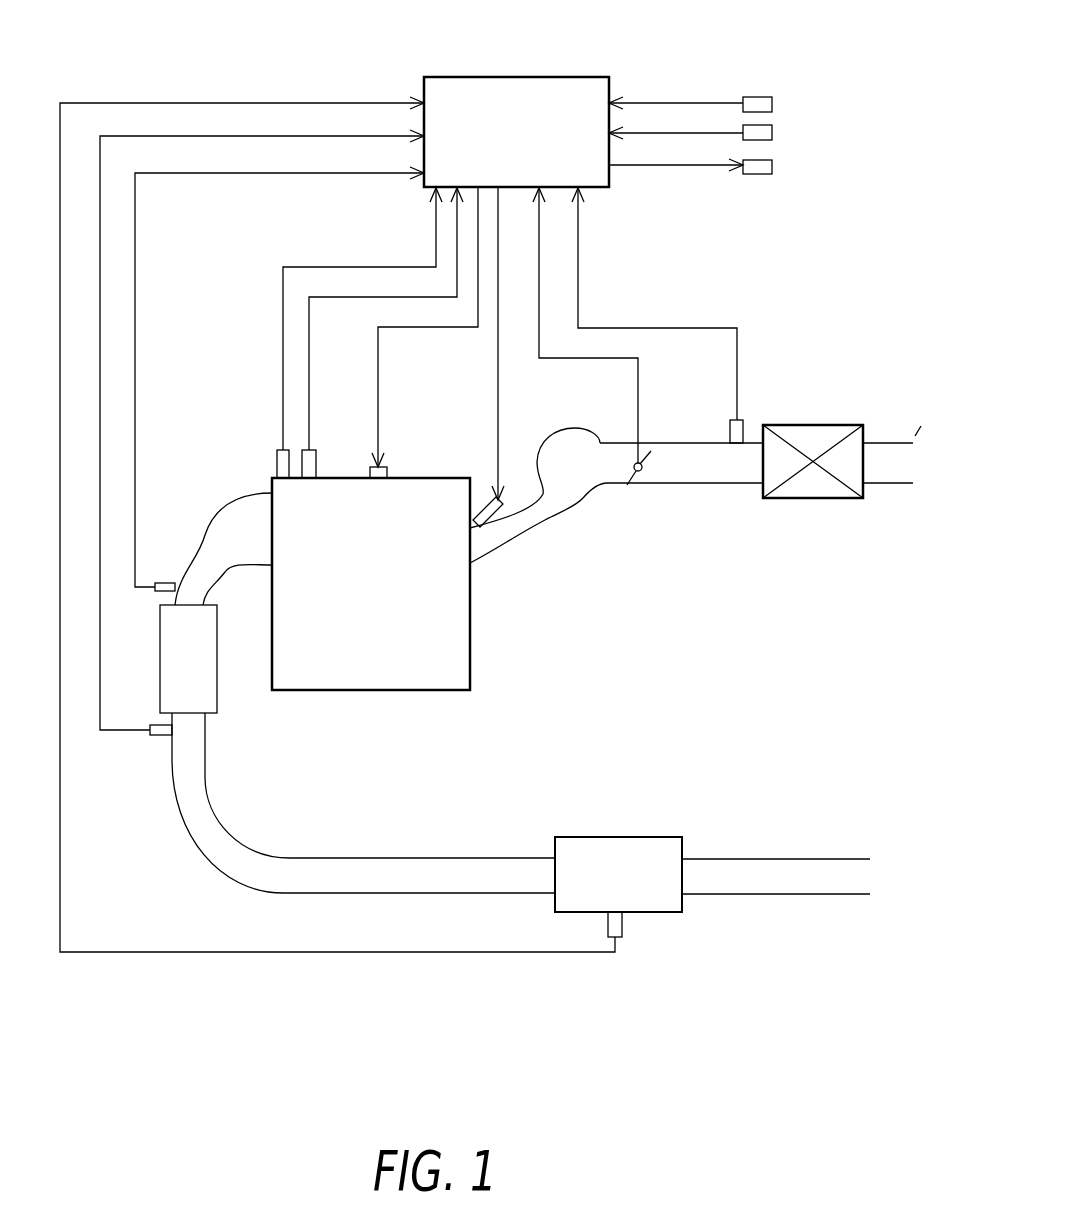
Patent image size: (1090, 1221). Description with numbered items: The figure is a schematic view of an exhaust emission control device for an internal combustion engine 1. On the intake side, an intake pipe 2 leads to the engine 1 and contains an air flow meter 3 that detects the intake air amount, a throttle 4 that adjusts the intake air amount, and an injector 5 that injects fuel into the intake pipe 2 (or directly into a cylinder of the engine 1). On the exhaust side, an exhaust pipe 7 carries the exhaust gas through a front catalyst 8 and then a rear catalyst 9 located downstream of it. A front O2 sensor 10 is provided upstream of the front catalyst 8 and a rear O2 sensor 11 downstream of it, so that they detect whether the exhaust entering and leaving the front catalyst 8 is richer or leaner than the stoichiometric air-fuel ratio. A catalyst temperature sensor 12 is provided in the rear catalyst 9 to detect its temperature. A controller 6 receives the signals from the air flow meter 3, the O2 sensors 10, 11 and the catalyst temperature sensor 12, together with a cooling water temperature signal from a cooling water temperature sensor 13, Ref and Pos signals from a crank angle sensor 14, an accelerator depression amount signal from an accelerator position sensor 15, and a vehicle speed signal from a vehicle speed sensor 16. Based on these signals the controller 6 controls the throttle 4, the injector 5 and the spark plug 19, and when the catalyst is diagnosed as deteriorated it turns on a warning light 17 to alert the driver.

The internal combustion engine 1 is at (471, 672).
The intake pipe 2 is at (735, 485).
The air flow meter 3 is at (745, 420).
The throttle 4 is at (640, 488).
The injector 5 is at (510, 508).
The controller 6 is at (527, 77).
The exhaust pipe 7 is at (362, 858).
The front catalyst 8 is at (217, 700).
The rear catalyst 9 is at (646, 837).
The front O2 sensor 10 is at (160, 583).
The rear O2 sensor 11 is at (157, 738).
The catalyst temperature sensor 12 is at (624, 932).
The cooling water temperature sensor 13 is at (316, 455).
The crank angle sensor 14 is at (277, 460).
The accelerator position sensor 15 is at (757, 97).
The vehicle speed sensor 16 is at (772, 132).
The warning light 17 is at (757, 174).
The spark plug 19 is at (387, 470).